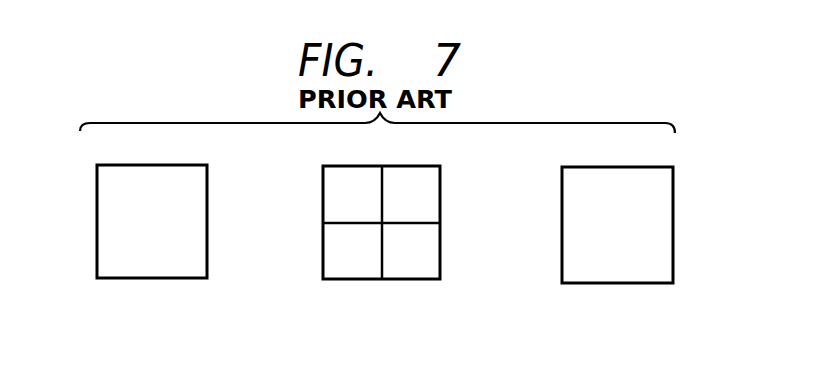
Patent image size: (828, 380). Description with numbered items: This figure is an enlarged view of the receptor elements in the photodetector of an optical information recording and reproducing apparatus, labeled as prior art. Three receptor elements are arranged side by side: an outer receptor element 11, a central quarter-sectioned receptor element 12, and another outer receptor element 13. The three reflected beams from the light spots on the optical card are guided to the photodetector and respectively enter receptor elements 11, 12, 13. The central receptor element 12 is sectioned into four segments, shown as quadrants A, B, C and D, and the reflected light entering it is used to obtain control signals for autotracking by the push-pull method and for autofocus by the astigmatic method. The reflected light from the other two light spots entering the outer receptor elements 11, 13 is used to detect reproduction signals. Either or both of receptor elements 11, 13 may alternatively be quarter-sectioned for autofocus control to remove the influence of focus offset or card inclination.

The receptor element 11 is at (190, 278).
The quarter-sectioned receptor element 12 is at (424, 279).
The receptor element 13 is at (650, 283).